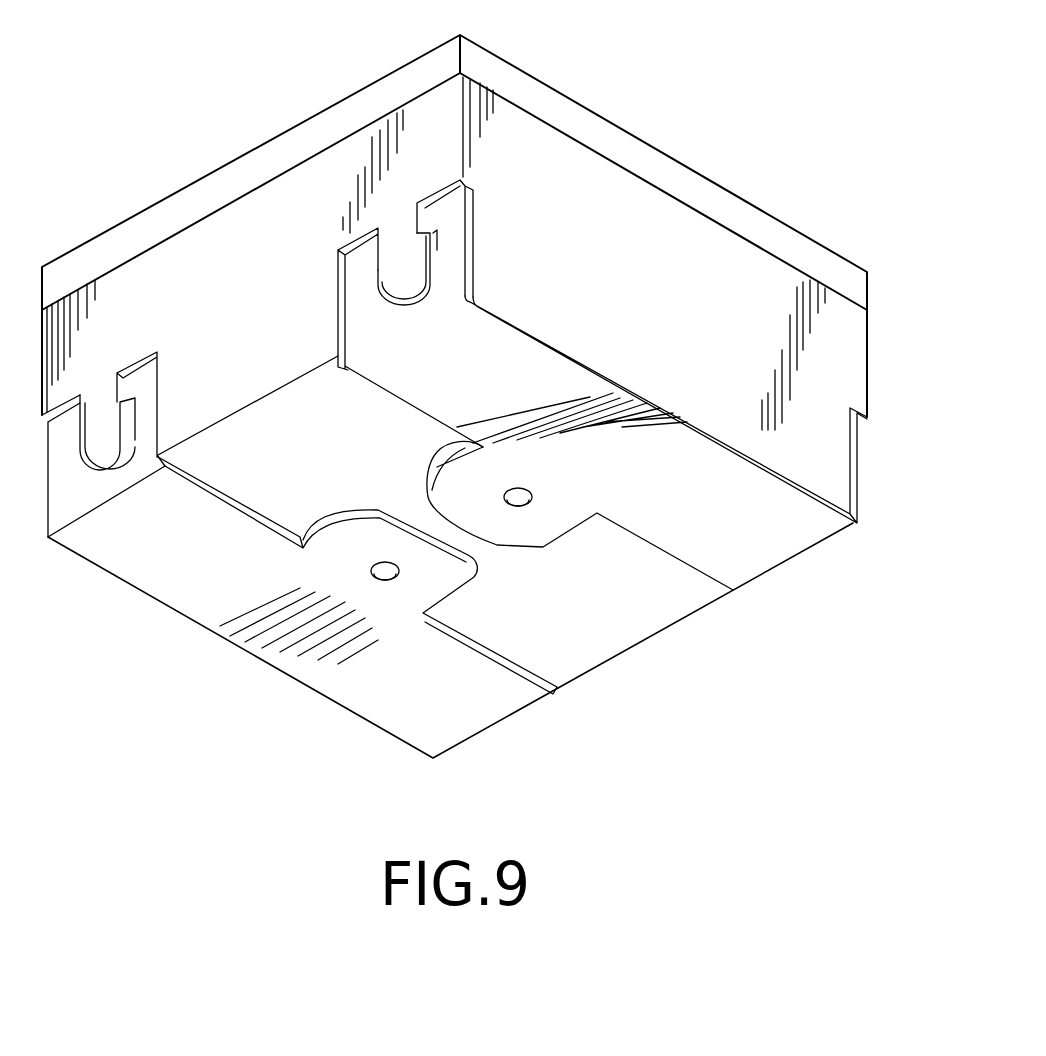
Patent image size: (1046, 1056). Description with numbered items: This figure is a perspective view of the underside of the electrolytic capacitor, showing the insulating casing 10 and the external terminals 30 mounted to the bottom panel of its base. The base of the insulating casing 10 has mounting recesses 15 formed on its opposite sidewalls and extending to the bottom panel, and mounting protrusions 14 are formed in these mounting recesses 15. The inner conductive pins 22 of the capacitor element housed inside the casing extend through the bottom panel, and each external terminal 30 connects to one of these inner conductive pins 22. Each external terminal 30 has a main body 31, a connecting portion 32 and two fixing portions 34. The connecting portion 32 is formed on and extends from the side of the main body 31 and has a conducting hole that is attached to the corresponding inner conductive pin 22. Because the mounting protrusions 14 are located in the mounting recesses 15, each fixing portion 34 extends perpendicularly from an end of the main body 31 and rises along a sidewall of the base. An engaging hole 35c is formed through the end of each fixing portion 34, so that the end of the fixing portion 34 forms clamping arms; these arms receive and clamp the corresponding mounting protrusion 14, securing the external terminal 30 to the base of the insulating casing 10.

The insulating casing 10 is at (644, 134).
The mounting protrusion 14 is at (402, 276).
The mounting recess 15 is at (343, 277).
The inner conductive pin 22 is at (383, 580).
The external terminal 30 is at (623, 380).
The main body 31 is at (715, 512).
The connecting portion 32 is at (553, 515).
The fixing portion 34 is at (450, 237).
The engaging hole 35c is at (415, 298).